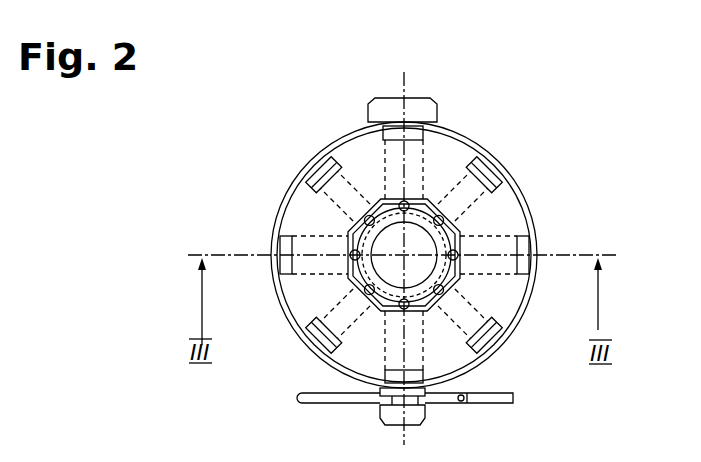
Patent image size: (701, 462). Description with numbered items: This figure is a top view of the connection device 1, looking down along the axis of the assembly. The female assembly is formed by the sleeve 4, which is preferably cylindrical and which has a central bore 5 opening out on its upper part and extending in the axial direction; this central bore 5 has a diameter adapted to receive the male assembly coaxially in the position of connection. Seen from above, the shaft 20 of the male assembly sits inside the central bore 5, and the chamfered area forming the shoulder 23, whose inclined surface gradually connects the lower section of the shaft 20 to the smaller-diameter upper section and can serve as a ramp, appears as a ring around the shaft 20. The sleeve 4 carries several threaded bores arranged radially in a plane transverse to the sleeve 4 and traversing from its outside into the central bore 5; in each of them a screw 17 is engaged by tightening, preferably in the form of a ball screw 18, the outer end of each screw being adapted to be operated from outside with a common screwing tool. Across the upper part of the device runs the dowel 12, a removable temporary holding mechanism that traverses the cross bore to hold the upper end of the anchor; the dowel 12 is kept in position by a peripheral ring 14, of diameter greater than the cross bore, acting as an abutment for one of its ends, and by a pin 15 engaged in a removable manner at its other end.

The connection device 1 is at (190, 157).
The sleeve 4 is at (533, 236).
The central bore 5 is at (416, 234).
The dowel 12 is at (412, 92).
The peripheral ring 14 is at (382, 112).
The pin 15 is at (302, 402).
The screw 17 is at (326, 184).
The ball screw 18 is at (350, 246).
The shaft 20 is at (455, 212).
The shoulder 23 is at (358, 281).